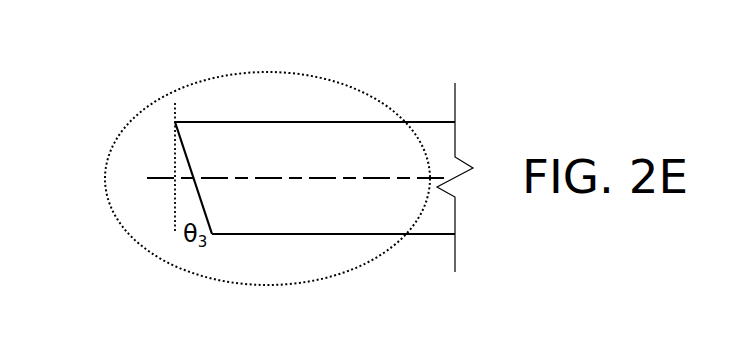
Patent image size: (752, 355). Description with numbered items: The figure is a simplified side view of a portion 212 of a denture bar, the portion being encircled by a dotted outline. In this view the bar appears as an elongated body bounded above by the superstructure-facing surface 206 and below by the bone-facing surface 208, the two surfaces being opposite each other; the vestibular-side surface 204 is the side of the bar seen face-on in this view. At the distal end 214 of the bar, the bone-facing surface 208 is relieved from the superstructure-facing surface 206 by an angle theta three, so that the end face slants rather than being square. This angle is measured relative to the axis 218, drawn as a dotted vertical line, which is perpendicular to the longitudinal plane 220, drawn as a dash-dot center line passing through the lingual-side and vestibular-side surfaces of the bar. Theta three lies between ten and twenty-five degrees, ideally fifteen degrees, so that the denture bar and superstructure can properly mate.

The vestibular-side surface 204 is at (263, 135).
The superstructure-facing surface 206 is at (343, 122).
The bone-facing surface 208 is at (332, 234).
The portion of the denture bar 212 is at (140, 110).
The distal end 214 is at (198, 198).
The axis 218 is at (173, 163).
The longitudinal plane 220 is at (400, 177).